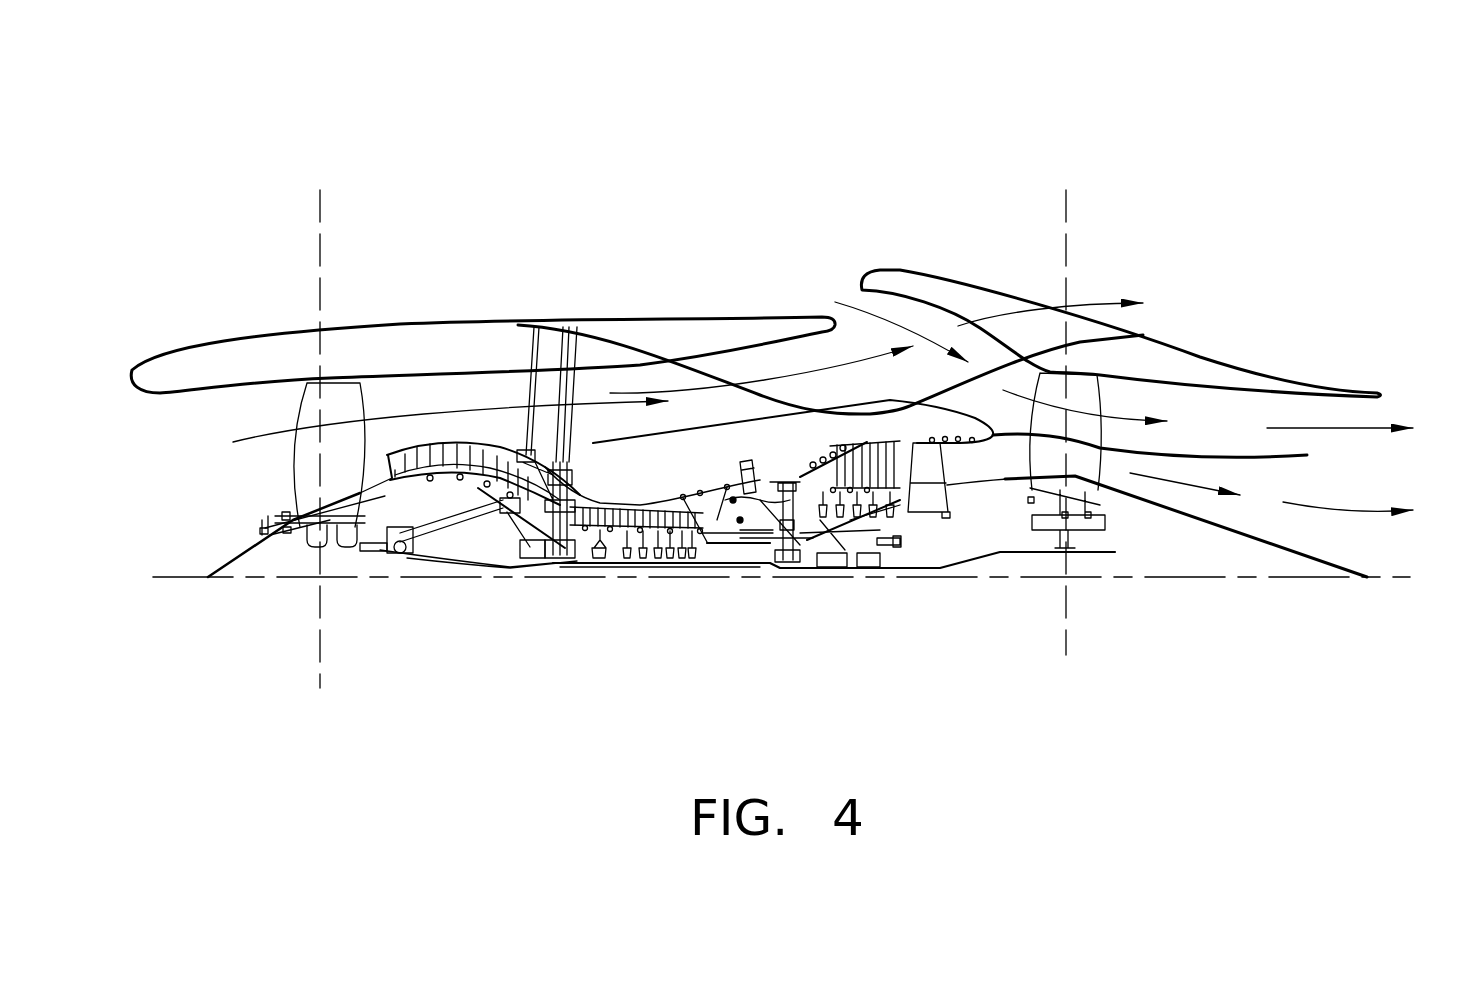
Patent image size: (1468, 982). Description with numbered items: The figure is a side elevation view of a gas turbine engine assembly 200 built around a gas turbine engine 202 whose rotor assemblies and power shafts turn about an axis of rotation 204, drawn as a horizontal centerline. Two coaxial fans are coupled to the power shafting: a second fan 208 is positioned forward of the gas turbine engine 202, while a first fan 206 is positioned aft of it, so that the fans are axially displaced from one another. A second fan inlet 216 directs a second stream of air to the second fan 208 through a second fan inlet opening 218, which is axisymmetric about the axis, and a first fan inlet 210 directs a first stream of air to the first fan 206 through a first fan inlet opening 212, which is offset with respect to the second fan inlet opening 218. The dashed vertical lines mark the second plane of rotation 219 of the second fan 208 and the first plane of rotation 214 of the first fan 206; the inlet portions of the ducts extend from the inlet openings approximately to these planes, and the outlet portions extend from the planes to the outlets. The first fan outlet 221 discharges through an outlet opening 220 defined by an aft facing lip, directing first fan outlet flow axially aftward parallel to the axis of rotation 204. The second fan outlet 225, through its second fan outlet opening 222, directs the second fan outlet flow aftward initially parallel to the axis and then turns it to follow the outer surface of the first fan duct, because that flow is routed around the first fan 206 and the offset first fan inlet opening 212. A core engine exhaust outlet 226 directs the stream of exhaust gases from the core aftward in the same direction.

The gas turbine engine assembly 200 is at (431, 143).
The gas turbine engine 202 is at (607, 603).
The axis of rotation 204 is at (168, 580).
The first fan 206 is at (1083, 427).
The second fan 208 is at (303, 458).
The first fan inlet 210 is at (973, 353).
The first fan inlet opening 212 is at (830, 297).
The first plane of rotation 214 is at (1068, 217).
The second fan inlet 216 is at (183, 428).
The second fan inlet opening 218 is at (205, 517).
The second plane of rotation 219 is at (323, 225).
The fan outlet opening 220 is at (1383, 540).
The first fan outlet 221 is at (1195, 400).
The second fan outlet opening 222 is at (1100, 323).
The second fan outlet 225 is at (813, 355).
The core engine exhaust outlet 226 is at (1272, 520).